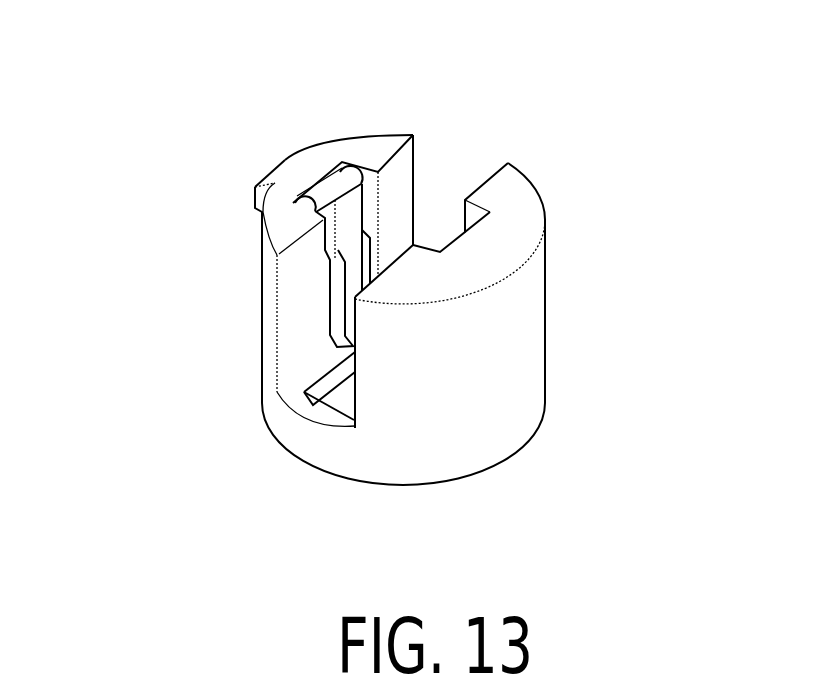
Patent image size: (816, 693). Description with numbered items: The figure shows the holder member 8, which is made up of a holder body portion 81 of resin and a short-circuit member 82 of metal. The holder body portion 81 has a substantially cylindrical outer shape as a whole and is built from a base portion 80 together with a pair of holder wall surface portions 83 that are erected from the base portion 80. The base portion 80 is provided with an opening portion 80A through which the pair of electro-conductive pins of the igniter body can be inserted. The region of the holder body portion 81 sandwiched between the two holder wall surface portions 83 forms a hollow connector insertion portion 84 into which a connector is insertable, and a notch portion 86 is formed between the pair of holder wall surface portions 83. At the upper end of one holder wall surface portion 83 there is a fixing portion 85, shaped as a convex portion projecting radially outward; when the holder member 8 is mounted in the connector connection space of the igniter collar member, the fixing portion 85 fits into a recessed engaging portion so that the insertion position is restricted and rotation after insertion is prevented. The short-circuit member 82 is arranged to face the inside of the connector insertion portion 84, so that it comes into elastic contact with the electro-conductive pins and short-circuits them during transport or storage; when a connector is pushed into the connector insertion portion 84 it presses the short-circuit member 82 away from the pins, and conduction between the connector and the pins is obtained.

The holder member 8 is at (505, 113).
The base portion 80 is at (302, 442).
The opening portion 80A is at (340, 402).
The holder body portion 81 is at (547, 350).
The short-circuit member 82 is at (328, 337).
The holder wall surface portion 83 is at (362, 136).
The connector insertion portion 84 is at (449, 233).
The fixing portion 85 is at (282, 166).
The notch portion 86 is at (442, 163).